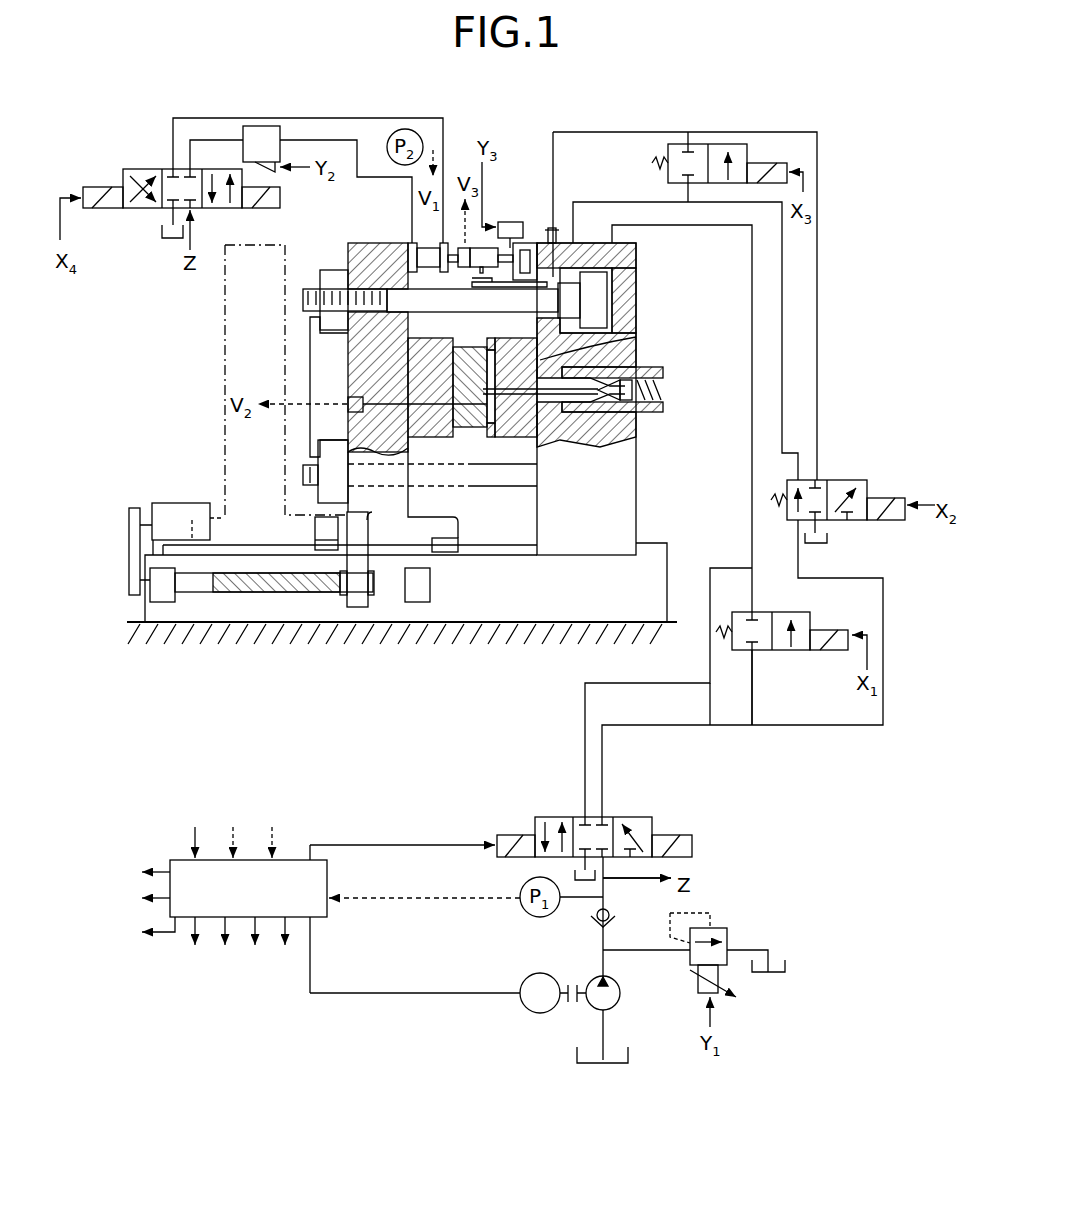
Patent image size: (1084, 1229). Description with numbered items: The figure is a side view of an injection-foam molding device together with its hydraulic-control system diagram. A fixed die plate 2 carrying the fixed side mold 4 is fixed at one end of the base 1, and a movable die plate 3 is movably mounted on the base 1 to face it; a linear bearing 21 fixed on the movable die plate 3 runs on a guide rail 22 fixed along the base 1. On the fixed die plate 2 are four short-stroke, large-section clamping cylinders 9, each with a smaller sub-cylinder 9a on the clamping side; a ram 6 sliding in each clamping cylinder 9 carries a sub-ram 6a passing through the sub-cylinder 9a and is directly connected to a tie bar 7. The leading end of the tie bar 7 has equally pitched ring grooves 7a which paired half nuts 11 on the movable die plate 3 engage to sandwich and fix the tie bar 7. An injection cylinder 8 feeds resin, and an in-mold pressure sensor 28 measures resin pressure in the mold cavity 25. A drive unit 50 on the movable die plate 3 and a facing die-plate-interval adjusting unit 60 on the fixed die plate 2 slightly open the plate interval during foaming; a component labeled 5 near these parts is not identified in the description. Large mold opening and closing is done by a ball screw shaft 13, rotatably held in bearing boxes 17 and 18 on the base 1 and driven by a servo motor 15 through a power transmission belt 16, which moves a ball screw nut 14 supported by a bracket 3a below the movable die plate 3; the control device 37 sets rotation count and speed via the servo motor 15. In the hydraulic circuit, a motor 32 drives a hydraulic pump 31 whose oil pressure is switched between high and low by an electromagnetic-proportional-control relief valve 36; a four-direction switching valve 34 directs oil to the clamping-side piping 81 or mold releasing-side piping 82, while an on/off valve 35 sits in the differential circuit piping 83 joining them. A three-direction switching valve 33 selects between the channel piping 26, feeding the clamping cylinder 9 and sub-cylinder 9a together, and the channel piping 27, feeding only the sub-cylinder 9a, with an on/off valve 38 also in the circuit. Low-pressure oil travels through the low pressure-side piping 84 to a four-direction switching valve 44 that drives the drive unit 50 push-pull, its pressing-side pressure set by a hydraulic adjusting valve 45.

The base 1 is at (645, 542).
The fixed die plate 2 is at (637, 270).
The movable die plate 3 is at (225, 352).
The bracket 3a is at (355, 608).
The fixed side mold 4 is at (545, 447).
The piston 5 is at (417, 363).
The ram 6 is at (600, 296).
The sub-ram 6a is at (600, 345).
The tie bar 7 is at (395, 275).
The ring grooves 7a is at (330, 275).
The injection cylinder 8 is at (663, 412).
The clamping cylinder 9 is at (620, 320).
The sub-cylinder 9a is at (537, 315).
The half nut 11 is at (317, 282).
The ball screw shaft 13 is at (205, 595).
The ball screw nut 14 is at (342, 596).
The servo motor 15 is at (178, 503).
The power transmission belt 16 is at (129, 516).
The bearing box 17 is at (163, 605).
The bearing box 18 is at (418, 603).
The linear bearing 21 is at (325, 550).
The guide rail 22 is at (263, 545).
The mold cavity 25 is at (490, 430).
The channel piping 26 is at (782, 348).
The channel piping 27 is at (817, 267).
The in-mold pressure sensor 28 is at (347, 405).
The hydraulic pump 31 is at (616, 1008).
The motor 32 is at (524, 1010).
The three-direction switching valve 33 is at (872, 498).
The four-direction switching valve 34 is at (540, 817).
The on/off valve 35 is at (775, 650).
The electromagnetic-proportional-control relief valve 36 is at (715, 990).
The control device 37 is at (290, 860).
The on/off valve 38 is at (668, 150).
The four-direction switching valve 44 is at (113, 208).
The hydraulic adjusting valve 45 is at (268, 167).
The drive unit 50 is at (453, 235).
The die-plate-interval adjusting unit 60 is at (517, 185).
The clamping-side piping 81 is at (712, 725).
The mold releasing-side piping 82 is at (640, 683).
The differential circuit piping 83 is at (752, 703).
The low pressure-side piping 84 is at (647, 897).